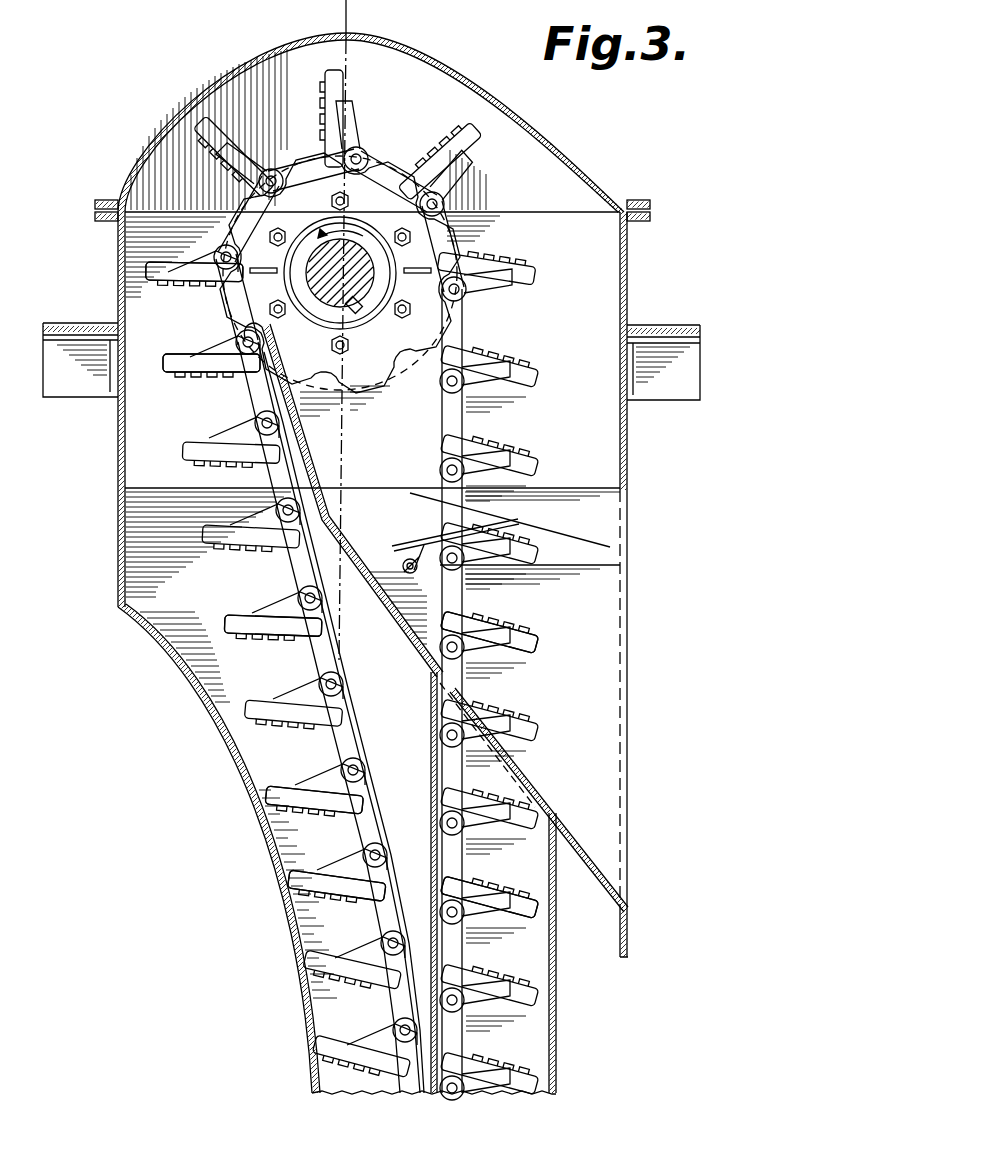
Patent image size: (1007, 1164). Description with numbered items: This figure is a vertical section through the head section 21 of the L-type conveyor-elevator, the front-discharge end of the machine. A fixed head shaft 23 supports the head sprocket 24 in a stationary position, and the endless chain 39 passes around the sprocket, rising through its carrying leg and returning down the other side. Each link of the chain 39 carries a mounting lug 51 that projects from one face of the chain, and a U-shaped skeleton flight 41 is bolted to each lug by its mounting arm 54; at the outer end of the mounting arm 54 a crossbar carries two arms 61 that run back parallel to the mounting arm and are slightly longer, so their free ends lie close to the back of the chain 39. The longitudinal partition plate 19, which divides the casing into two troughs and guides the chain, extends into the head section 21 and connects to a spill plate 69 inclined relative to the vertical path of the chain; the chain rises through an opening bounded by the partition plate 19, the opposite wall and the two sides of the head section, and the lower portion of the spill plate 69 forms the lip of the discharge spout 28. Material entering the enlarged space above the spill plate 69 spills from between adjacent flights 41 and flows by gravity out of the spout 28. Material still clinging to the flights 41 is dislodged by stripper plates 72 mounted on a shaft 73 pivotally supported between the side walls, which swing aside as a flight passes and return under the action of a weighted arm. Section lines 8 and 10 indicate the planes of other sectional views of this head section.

The section line 8- 8 is at (350, 12).
The section line 10- 10 is at (414, 510).
The partition plate 19 is at (430, 798).
The head section 21 is at (222, 730).
The head shaft 23 is at (352, 247).
The head sprocket 24 is at (372, 388).
The discharge spout 28 is at (596, 866).
The chain 39 is at (360, 740).
The flights 41 is at (158, 272).
The mounting lug 51 is at (238, 168).
The mounting arm 54 is at (452, 132).
The arms 61 is at (333, 94).
The spill plate 69 is at (345, 549).
The stripper plates 72 is at (506, 526).
The shaft 73 is at (408, 575).